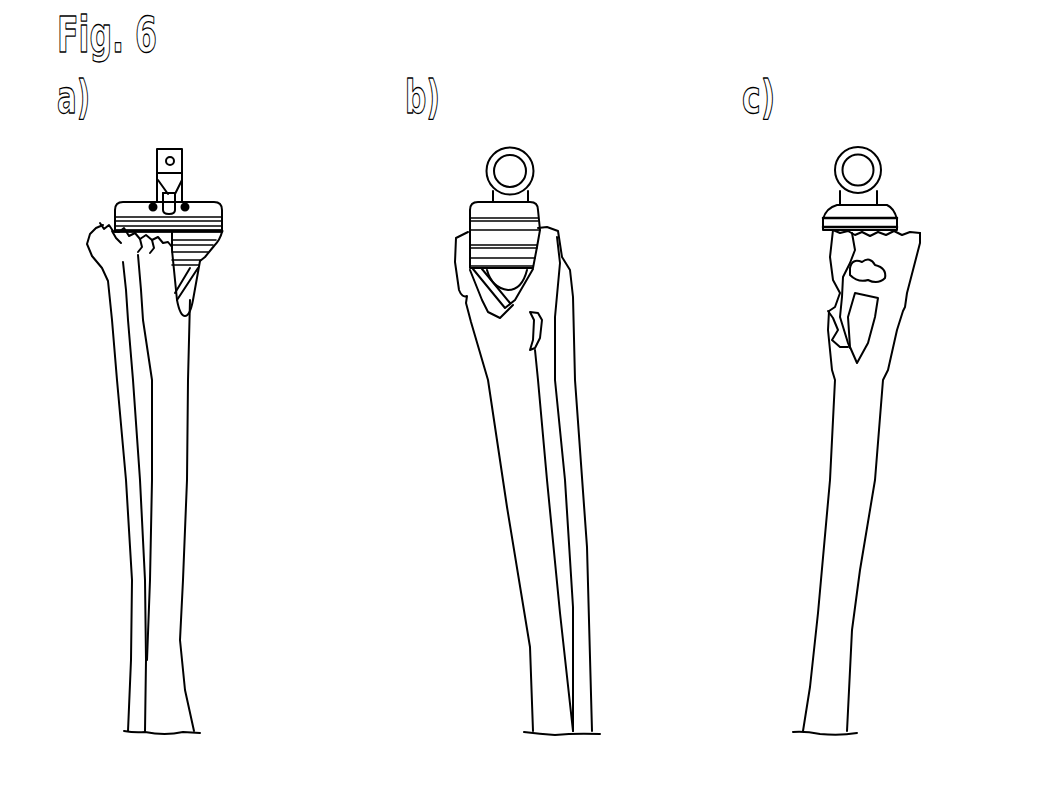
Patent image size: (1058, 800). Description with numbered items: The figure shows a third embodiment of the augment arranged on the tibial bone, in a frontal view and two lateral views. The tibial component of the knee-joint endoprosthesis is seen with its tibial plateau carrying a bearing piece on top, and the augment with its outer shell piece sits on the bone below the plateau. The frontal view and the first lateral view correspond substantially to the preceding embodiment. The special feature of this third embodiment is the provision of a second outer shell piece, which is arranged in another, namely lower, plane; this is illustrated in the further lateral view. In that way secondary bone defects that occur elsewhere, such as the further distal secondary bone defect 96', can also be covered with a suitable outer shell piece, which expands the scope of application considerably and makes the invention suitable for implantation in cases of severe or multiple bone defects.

The further distal secondary bone defect 96' is at (799, 324).